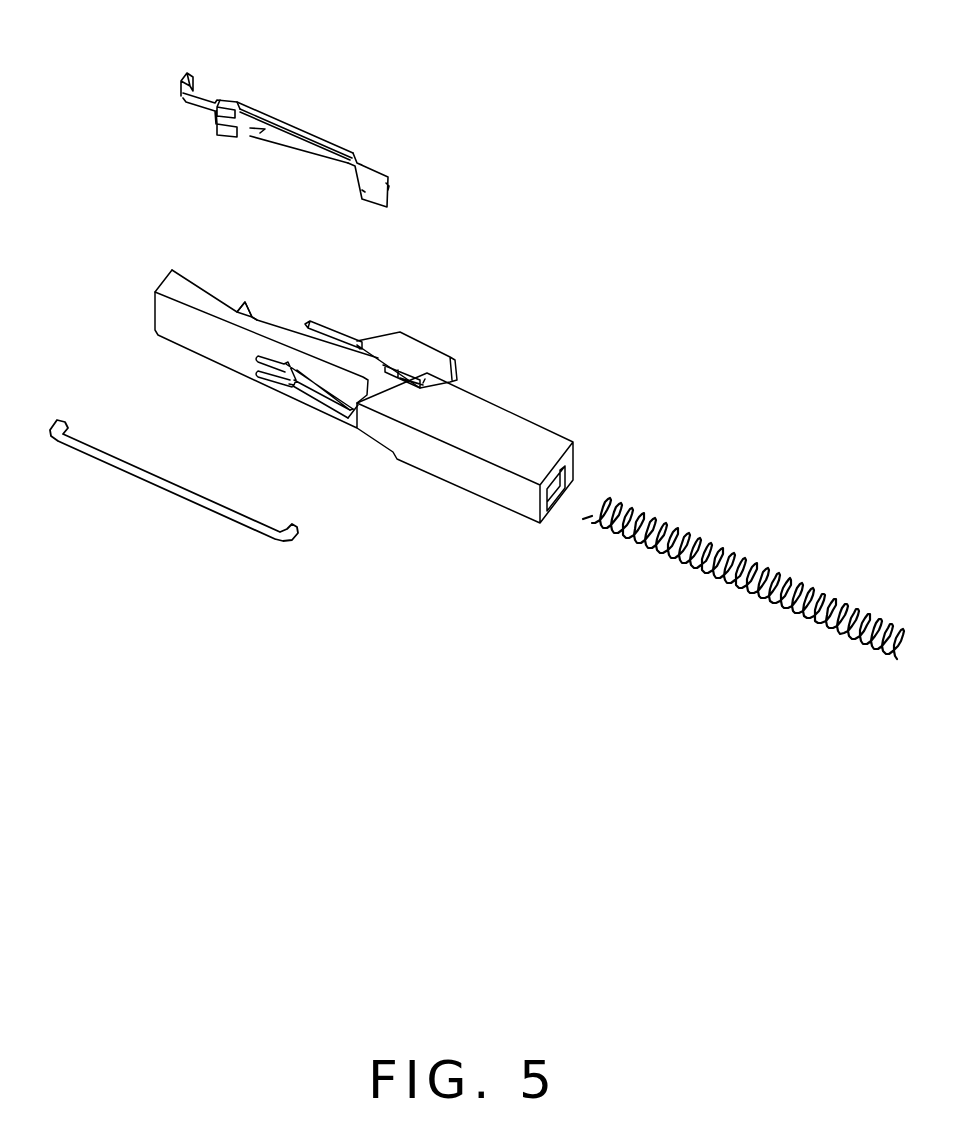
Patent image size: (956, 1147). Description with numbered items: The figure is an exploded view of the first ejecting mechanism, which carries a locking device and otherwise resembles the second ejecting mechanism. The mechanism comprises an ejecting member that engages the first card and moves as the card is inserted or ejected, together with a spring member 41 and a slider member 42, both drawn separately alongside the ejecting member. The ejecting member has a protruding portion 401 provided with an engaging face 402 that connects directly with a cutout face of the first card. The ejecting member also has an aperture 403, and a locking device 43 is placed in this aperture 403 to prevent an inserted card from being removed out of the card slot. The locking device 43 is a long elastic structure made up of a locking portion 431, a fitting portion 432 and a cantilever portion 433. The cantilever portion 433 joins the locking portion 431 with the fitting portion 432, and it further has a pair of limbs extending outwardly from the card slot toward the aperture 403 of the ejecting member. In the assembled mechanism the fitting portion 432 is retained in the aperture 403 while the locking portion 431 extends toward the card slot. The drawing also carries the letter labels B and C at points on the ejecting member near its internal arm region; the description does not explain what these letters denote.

The spring member 41 is at (680, 527).
The slider member 42 is at (230, 513).
The locking device 43 is at (248, 127).
The locking portion 431 is at (190, 74).
The fitting portion 432 is at (367, 177).
The cantilever portion 433 is at (301, 140).
The protruding portion 401 is at (430, 358).
The engaging face 402 is at (377, 330).
The aperture 403 is at (253, 313).
The contact tip B is at (290, 377).
The arm end C is at (352, 410).